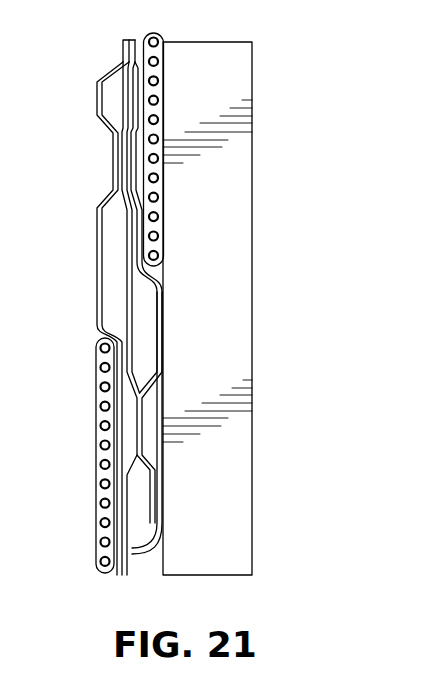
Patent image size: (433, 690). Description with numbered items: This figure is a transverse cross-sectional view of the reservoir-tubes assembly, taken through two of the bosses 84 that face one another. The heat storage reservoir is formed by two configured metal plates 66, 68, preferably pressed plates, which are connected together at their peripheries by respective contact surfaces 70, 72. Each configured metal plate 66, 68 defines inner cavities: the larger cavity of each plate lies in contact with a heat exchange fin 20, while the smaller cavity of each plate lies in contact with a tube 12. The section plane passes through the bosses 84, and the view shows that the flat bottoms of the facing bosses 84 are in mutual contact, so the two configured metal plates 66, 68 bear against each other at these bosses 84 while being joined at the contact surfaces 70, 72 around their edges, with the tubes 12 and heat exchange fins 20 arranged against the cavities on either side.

The tube 12 is at (172, 97).
The heat exchange fin 20 is at (230, 541).
The configured metal plate 66 is at (86, 266).
The configured metal plate 68 is at (172, 337).
The contact surface 70 is at (125, 40).
The contact surface 72 is at (132, 40).
The boss 84 is at (114, 170).